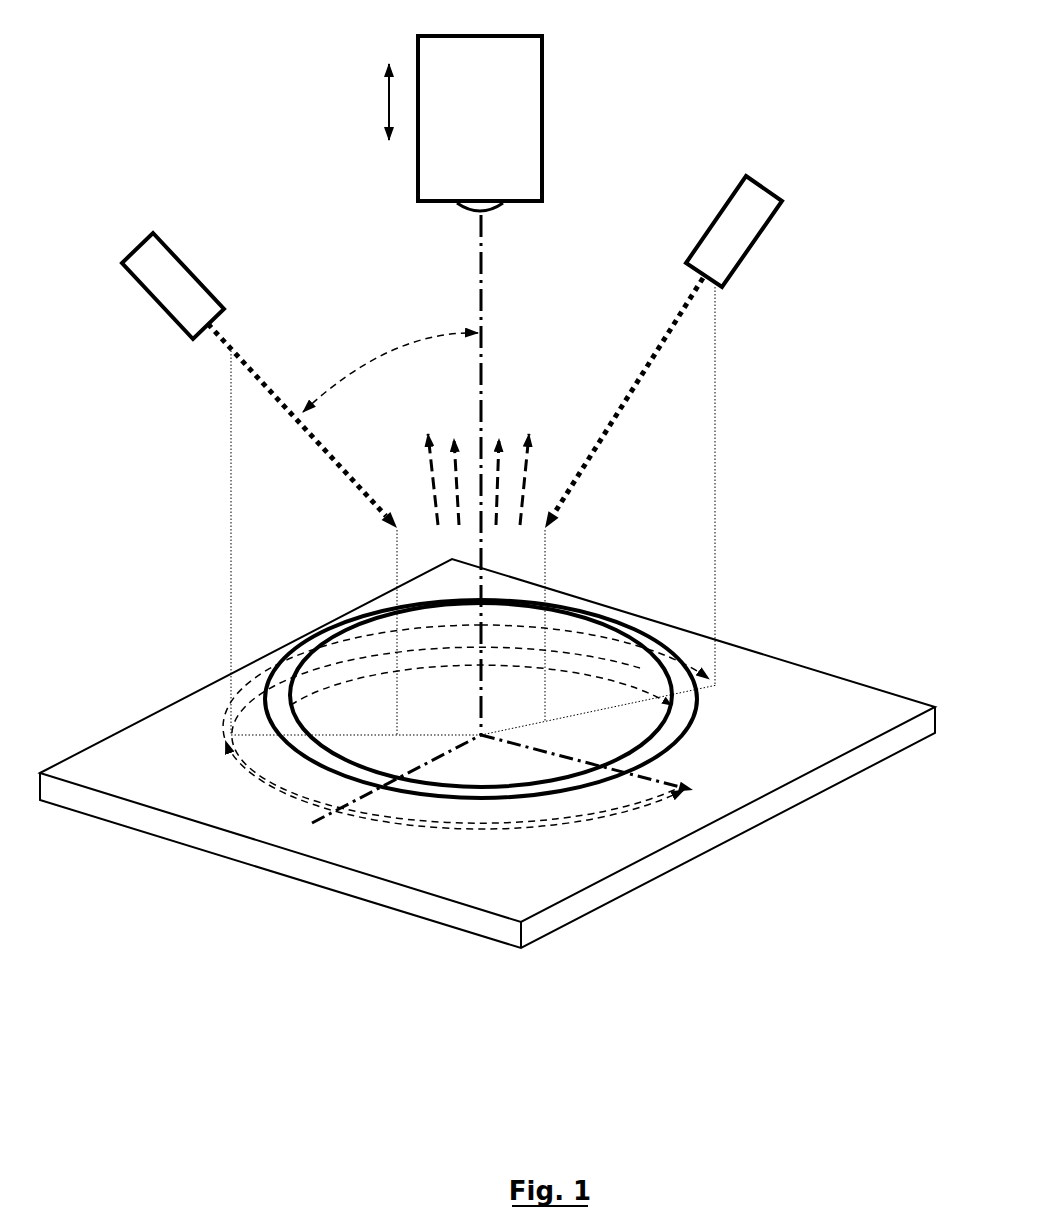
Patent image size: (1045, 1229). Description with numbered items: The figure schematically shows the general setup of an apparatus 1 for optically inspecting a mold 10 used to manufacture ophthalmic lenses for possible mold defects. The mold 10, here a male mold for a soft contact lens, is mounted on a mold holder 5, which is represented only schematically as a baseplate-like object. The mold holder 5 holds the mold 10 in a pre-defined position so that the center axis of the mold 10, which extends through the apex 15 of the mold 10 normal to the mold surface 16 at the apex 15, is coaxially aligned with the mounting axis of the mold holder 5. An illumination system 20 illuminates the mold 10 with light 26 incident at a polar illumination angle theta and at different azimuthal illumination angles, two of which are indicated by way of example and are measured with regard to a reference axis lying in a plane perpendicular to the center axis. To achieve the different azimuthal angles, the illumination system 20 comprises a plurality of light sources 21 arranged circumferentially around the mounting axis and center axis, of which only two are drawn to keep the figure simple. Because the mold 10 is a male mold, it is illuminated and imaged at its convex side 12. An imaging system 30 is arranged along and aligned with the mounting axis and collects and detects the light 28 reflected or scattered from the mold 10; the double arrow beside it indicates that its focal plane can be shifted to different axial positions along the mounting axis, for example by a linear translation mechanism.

The apparatus 1 is at (483, 532).
The mold holder 5 is at (438, 912).
The mold 10 is at (464, 638).
The convex side 12 is at (316, 708).
The apex 15 is at (470, 593).
The mold surface 16 is at (497, 617).
The illumination system 20 is at (432, 199).
The light sources 21 is at (157, 284).
The light 26 is at (283, 397).
The reflected/scattered light 28 is at (513, 421).
The imaging system 30 is at (525, 101).